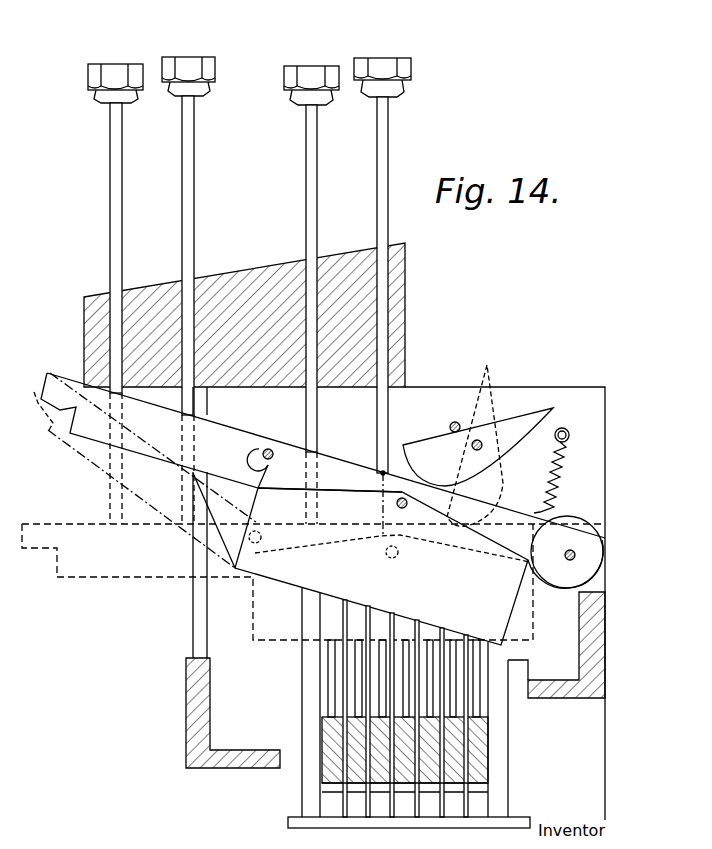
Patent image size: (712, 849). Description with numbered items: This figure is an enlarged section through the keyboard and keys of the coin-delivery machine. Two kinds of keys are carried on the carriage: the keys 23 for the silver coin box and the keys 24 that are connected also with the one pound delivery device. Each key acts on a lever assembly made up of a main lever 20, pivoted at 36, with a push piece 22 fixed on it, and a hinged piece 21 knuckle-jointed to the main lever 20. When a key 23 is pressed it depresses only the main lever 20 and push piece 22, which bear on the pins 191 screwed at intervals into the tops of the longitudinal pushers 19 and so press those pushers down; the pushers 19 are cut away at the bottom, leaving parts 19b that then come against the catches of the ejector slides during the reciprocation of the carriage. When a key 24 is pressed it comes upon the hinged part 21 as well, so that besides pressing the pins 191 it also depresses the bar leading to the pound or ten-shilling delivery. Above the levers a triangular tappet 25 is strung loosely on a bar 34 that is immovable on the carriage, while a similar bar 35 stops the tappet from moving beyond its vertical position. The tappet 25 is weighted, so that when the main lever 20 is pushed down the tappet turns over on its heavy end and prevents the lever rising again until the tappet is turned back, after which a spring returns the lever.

The pusher 19 is at (326, 737).
The pin 191 is at (328, 680).
The cut-away part of pusher 19b is at (327, 787).
The main lever 20 is at (330, 478).
The hinged piece 21 is at (319, 470).
The push piece 22 is at (382, 566).
The key 23 is at (380, 62).
The key 24 is at (172, 60).
The triangular tappet 25 is at (478, 445).
The bar 34 is at (477, 445).
The bar 35 is at (453, 426).
The pivot 36 is at (568, 556).